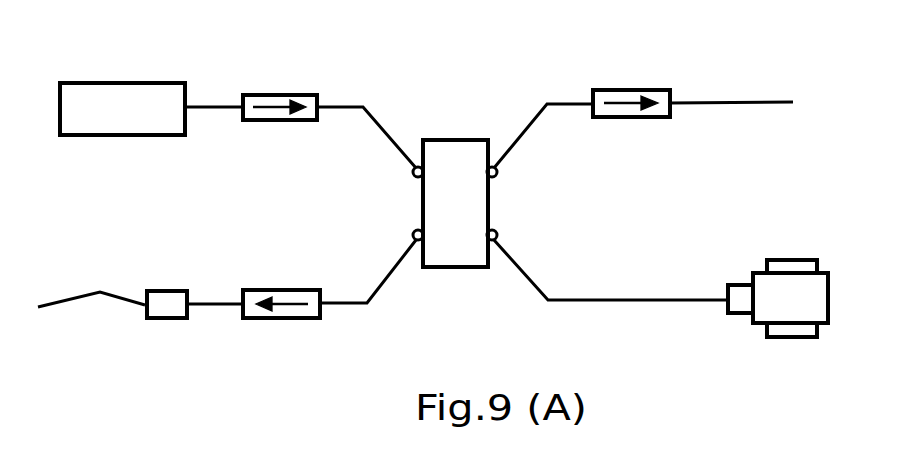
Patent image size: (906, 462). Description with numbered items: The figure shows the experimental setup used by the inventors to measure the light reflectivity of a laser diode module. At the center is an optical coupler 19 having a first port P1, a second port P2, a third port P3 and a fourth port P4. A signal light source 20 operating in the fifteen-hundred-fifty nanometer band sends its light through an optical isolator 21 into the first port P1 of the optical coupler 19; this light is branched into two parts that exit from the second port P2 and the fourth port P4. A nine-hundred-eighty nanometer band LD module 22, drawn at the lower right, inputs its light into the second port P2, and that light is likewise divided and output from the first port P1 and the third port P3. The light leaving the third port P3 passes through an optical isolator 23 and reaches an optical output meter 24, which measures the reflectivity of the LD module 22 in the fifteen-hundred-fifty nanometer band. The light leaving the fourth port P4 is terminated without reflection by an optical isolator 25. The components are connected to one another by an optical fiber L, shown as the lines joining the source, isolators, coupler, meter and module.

The optical coupler 19 is at (458, 154).
The signal light source 20 is at (98, 82).
The optical isolator 21 is at (268, 93).
The 980 nm band LD module 22 is at (780, 262).
The optical isolator 23 is at (258, 320).
The optical output meter 24 is at (163, 320).
The optical isolator 25 is at (620, 88).
The optical fiber L is at (352, 105).
The first port P1 is at (400, 180).
The second port P2 is at (513, 237).
The third port P3 is at (400, 240).
The fourth port P4 is at (513, 180).